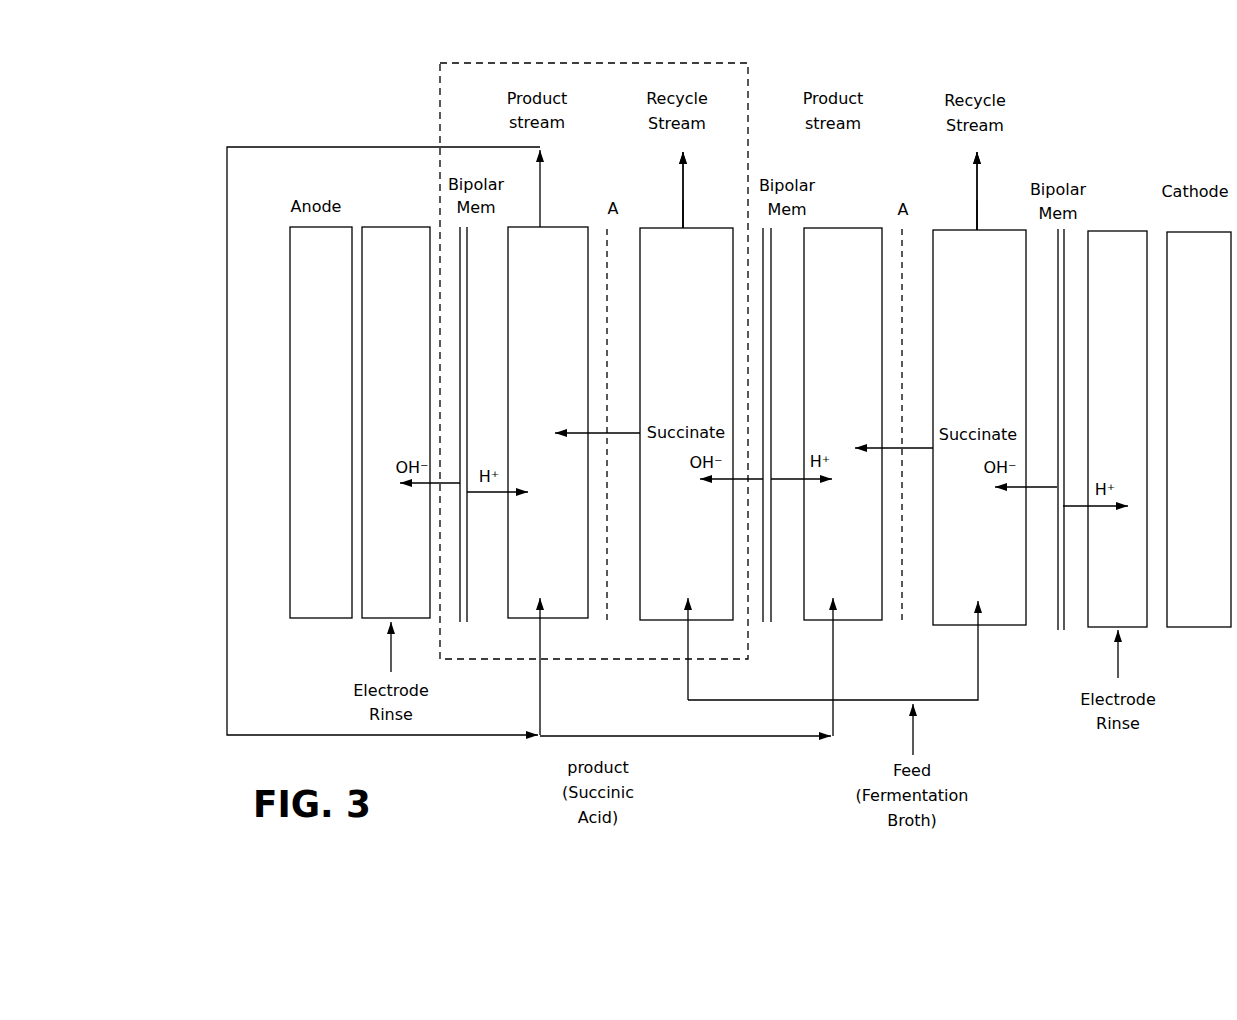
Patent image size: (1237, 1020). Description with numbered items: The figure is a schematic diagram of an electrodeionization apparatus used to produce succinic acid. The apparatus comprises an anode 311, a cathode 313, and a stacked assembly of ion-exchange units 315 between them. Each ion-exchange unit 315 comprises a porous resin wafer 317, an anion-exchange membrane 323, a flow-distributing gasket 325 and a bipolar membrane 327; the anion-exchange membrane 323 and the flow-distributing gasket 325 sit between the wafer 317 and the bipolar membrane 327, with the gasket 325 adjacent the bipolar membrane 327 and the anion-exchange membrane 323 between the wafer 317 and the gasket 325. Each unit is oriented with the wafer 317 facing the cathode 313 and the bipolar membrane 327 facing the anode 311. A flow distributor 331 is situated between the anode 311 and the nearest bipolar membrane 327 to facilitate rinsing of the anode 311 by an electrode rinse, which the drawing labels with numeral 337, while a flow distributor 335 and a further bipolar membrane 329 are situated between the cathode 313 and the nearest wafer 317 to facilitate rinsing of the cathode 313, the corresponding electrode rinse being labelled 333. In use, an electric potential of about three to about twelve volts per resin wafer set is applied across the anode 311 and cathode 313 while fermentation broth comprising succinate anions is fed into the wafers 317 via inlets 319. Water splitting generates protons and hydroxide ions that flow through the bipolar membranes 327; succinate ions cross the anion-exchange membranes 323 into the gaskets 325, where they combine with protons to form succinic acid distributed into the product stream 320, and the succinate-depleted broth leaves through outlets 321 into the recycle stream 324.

The anode 311 is at (302, 560).
The cathode 313 is at (1182, 564).
The ion-exchange unit 315 is at (747, 58).
The porous resin wafer 317 is at (671, 560).
The inlet 319 is at (687, 622).
The product stream 320 is at (227, 288).
The outlet 321 is at (683, 221).
The anion-exchange membrane 323 is at (601, 608).
The recycle stream 324 is at (683, 222).
The flow-distributing gasket 325 is at (532, 560).
The bipolar membrane 327 is at (463, 622).
The bipolar membrane 329 is at (1060, 632).
The flow distributor 331 is at (381, 560).
The cathode electrode rinse inlet 333 is at (1123, 628).
The flow distributor 335 is at (1103, 564).
The anode electrode rinse inlet 337 is at (386, 619).